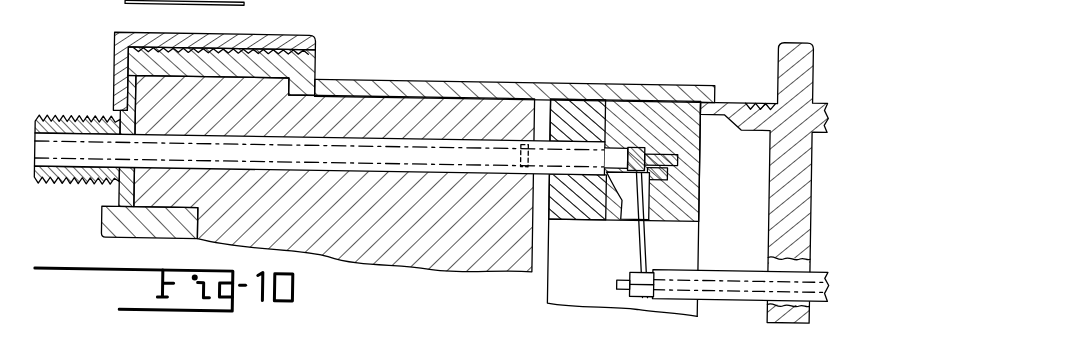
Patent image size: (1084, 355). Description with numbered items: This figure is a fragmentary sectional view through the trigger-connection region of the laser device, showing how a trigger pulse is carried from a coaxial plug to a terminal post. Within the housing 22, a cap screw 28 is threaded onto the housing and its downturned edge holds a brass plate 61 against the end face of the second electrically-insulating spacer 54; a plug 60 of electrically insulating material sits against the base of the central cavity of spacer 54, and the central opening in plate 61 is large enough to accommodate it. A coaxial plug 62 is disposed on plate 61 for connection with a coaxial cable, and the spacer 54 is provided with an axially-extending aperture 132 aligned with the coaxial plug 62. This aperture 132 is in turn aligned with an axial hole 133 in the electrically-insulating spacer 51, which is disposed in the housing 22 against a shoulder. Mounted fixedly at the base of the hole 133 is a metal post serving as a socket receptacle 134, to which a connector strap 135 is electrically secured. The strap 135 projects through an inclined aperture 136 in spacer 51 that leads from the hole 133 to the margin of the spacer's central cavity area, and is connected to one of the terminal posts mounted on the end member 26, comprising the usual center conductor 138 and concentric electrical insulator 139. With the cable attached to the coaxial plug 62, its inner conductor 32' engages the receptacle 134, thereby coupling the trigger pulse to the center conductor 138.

The housing 22 is at (401, 76).
The end member 26 is at (791, 31).
The cap screw 28 is at (244, 26).
The inner conductor 32' is at (578, 120).
The electrically-insulating spacer 51 is at (674, 120).
The second electrically-insulating spacer 54 is at (259, 205).
The plug 60 is at (103, 225).
The brass plate 61 is at (113, 95).
The coaxial plug 62 is at (77, 180).
The axially-extending aperture 132 is at (400, 139).
The axial hole 133 is at (606, 140).
The socket receptacle 134 is at (578, 197).
The connector strap 135 is at (638, 240).
The inclined aperture 136 is at (622, 212).
The center conductor 138 is at (727, 281).
The electrical insulator 139 is at (713, 261).